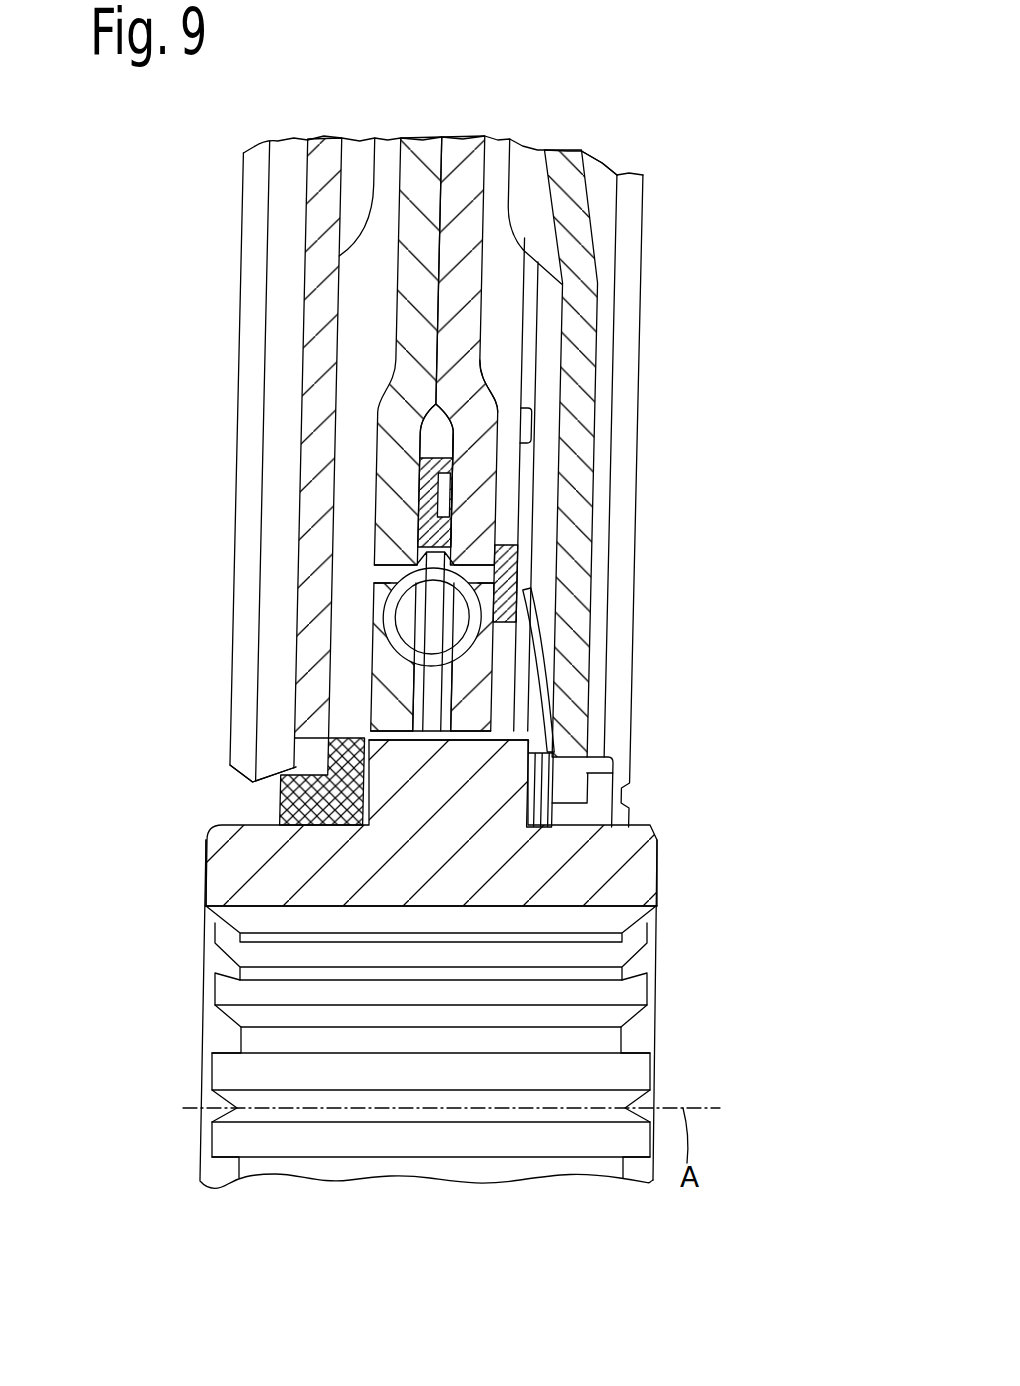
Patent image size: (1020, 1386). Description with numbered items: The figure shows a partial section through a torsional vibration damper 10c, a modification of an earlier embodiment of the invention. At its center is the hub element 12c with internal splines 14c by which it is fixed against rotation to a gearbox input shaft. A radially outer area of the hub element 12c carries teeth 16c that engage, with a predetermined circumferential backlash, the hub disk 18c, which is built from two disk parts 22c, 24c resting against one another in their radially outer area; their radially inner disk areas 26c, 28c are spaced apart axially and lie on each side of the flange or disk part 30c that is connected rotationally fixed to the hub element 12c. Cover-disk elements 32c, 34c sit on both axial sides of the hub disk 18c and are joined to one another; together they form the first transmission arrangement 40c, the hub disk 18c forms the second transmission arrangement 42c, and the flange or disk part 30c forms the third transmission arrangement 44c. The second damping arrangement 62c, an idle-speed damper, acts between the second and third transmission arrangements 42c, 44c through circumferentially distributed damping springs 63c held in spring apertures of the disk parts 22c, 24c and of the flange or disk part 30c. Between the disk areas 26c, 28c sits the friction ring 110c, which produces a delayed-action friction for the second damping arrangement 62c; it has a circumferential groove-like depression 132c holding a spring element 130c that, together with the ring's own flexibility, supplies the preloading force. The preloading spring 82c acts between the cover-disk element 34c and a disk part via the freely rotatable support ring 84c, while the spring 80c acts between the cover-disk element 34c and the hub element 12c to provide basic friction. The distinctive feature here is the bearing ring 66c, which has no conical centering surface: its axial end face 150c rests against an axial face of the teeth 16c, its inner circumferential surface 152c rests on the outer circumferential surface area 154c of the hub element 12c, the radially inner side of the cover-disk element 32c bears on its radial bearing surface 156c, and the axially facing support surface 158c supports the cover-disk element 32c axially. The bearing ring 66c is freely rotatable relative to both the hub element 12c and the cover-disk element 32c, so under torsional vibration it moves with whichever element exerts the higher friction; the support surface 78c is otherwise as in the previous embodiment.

The torsional vibration damper 10c is at (745, 285).
The hub element 12c is at (662, 935).
The internal splines 14c is at (610, 1043).
The teeth 16c is at (387, 785).
The hub disk 18c is at (437, 130).
The disk part 22c is at (410, 137).
The disk part 24c is at (469, 130).
The disk area 26c is at (389, 440).
The disk area 28c is at (479, 408).
The flange or disk part 30c is at (542, 658).
The cover-disk element 32c is at (314, 137).
The cover-disk element 34c is at (565, 145).
The first transmission arrangement 40c is at (644, 222).
The second transmission arrangement 42c is at (533, 45).
The third transmission arrangement 44c is at (503, 772).
The second damping arrangement 62c is at (484, 630).
The damping springs 63c is at (513, 553).
The bearing ring 66c is at (287, 798).
The support surface 78c is at (455, 820).
The spring 80c is at (633, 785).
The preloading spring 82c is at (457, 731).
The support ring 84c is at (456, 545).
The friction ring 110c is at (418, 462).
The spring element 130c is at (457, 490).
The groove-like depression 132c is at (376, 533).
The axial end face 150c is at (379, 712).
The inner circumferential surface 152c is at (207, 872).
The outer circumferential surface area 154c is at (247, 825).
The radial bearing surface 156c is at (301, 768).
The support surface 158c is at (332, 736).